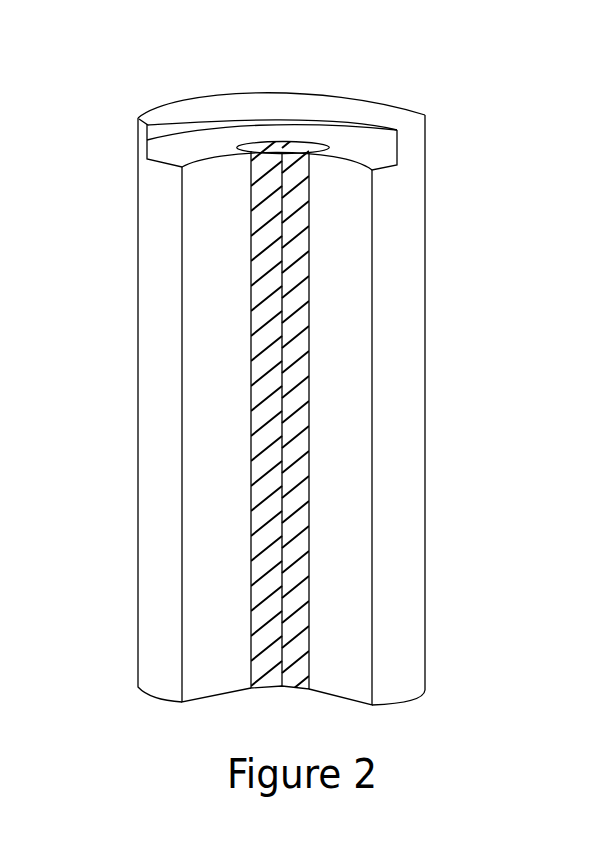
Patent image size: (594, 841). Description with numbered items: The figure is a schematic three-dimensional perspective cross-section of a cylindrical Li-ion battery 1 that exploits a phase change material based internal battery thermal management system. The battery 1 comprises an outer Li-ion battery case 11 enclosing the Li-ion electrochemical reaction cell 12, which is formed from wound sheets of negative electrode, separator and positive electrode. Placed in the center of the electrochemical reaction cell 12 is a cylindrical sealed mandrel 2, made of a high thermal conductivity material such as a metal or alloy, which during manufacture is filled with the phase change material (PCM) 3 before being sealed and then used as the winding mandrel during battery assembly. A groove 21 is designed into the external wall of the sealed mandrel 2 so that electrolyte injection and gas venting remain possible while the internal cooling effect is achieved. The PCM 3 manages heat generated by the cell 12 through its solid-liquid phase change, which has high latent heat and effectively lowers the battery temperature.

The Li-ion battery 1 is at (547, 70).
The Li-ion battery case 11 is at (397, 140).
The Li-ion electrochemical reaction cell 12 is at (348, 240).
The sealed mandrel 2 is at (330, 144).
The groove 21 is at (282, 142).
The phase change material (PCM) 3 is at (287, 240).